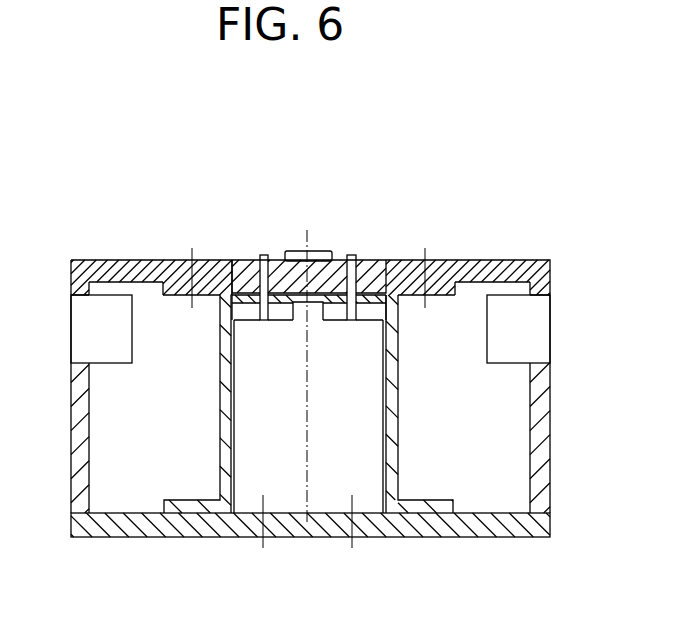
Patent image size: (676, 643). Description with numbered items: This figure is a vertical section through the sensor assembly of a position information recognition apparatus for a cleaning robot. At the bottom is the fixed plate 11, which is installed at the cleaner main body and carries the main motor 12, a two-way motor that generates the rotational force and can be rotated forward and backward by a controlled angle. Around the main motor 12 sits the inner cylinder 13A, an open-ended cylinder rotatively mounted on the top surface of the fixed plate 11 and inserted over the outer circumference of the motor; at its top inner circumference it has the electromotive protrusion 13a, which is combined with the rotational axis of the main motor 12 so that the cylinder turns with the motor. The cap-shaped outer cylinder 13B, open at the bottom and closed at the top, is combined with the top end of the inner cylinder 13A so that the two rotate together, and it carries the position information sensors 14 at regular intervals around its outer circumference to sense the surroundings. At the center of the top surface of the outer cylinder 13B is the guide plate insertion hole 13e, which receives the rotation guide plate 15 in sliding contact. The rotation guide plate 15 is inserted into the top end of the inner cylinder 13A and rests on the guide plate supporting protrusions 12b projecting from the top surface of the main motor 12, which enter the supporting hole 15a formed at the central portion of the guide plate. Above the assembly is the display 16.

The fixed plate 11 is at (115, 527).
The main motor 12 is at (244, 500).
The guide plate supporting protrusion 12b is at (265, 262).
The inner cylinder 13A is at (226, 426).
The outer cylinder 13B is at (79, 480).
The electromotive protrusion 13a is at (394, 262).
The guide plate insertion hole 13e is at (230, 262).
The position information sensor 14 is at (82, 333).
The rotation guide plate 15 is at (240, 262).
The supporting hole 15a is at (352, 262).
The display 16 is at (298, 254).